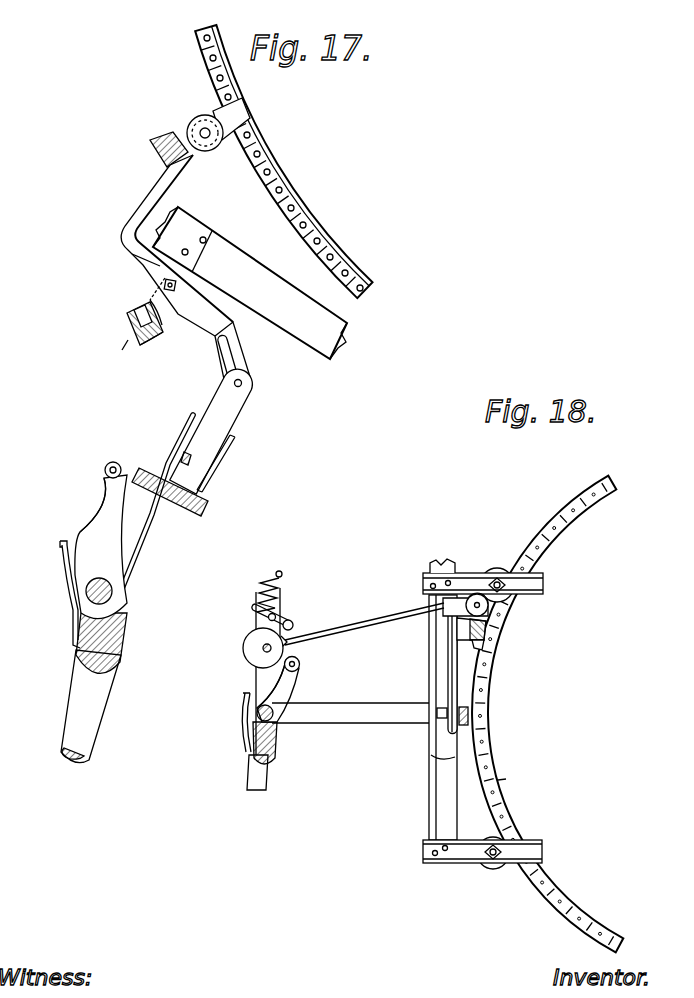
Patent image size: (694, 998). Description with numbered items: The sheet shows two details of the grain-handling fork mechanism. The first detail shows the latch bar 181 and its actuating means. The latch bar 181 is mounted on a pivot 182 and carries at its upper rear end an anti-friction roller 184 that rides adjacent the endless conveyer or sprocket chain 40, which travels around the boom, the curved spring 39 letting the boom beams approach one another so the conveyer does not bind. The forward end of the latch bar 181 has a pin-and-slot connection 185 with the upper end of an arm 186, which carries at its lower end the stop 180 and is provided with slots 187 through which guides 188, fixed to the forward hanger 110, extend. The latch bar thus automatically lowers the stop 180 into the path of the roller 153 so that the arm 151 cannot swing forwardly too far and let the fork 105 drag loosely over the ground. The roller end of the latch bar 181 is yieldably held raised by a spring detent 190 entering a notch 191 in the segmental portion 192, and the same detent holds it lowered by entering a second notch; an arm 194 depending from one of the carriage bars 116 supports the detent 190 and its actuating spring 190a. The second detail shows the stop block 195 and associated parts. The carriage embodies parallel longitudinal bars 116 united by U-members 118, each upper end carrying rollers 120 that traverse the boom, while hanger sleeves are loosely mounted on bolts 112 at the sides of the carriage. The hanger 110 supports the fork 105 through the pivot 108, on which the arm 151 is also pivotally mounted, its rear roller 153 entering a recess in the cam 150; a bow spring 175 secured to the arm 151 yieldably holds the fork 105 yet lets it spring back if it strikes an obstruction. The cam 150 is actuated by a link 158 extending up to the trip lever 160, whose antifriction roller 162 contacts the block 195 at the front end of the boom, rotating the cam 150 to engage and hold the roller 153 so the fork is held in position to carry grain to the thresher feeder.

In FIG. 17, the curved spring 39 is at (331, 237).
In FIG. 18, the curved spring 39 is at (507, 784).
In FIG. 17, the endless conveyer or sprocket chain 40 is at (262, 172).
In FIG. 18, the endless conveyer or sprocket chain 40 is at (488, 696).
In FIG. 17, the fork 105 is at (85, 704).
In FIG. 18, the fork 105 is at (272, 773).
In FIG. 17, the pivot 108 is at (128, 606).
In FIG. 18, the pivot 108 is at (262, 716).
In FIG. 17, the hanger 110 is at (185, 426).
In FIG. 18, the hanger 110 is at (352, 723).
In FIG. 18, the bolt 112 is at (441, 728).
In FIG. 17, the longitudinal bar 116 is at (250, 283).
In FIG. 18, the longitudinal bar 116 is at (457, 806).
In FIG. 18, the U-member 118 is at (423, 585).
In FIG. 18, the roller 120 is at (499, 568).
In FIG. 18, the cam 150 is at (250, 650).
In FIG. 17, the arm 151 is at (108, 500).
In FIG. 18, the arm 151 is at (285, 682).
In FIG. 17, the roller 153 is at (104, 466).
In FIG. 18, the roller 153 is at (299, 671).
In FIG. 18, the link 158 is at (355, 633).
In FIG. 18, the trip lever 160 is at (458, 600).
In FIG. 17, the antifriction roller 162 is at (234, 145).
In FIG. 18, the antifriction roller 162 is at (488, 614).
In FIG. 17, the bow spring 175 is at (66, 596).
In FIG. 17, the stop 180 is at (205, 508).
In FIG. 17, the latch bar 181 is at (137, 213).
In FIG. 17, the pivot 182 is at (160, 262).
In FIG. 17, the anti-friction roller 184 is at (190, 118).
In FIG. 17, the pin-and-slot connection 185 is at (247, 375).
In FIG. 17, the arm 186 is at (222, 406).
In FIG. 17, the slot 187 is at (203, 470).
In FIG. 17, the guide 188 is at (176, 452).
In FIG. 17, the spring detent 190 is at (160, 338).
In FIG. 17, the actuating spring 190a is at (128, 348).
In FIG. 17, the notch 191 is at (162, 318).
In FIG. 17, the segmental portion 192 is at (160, 284).
In FIG. 17, the arm 194 is at (127, 317).
In FIG. 18, the block 195 is at (478, 647).